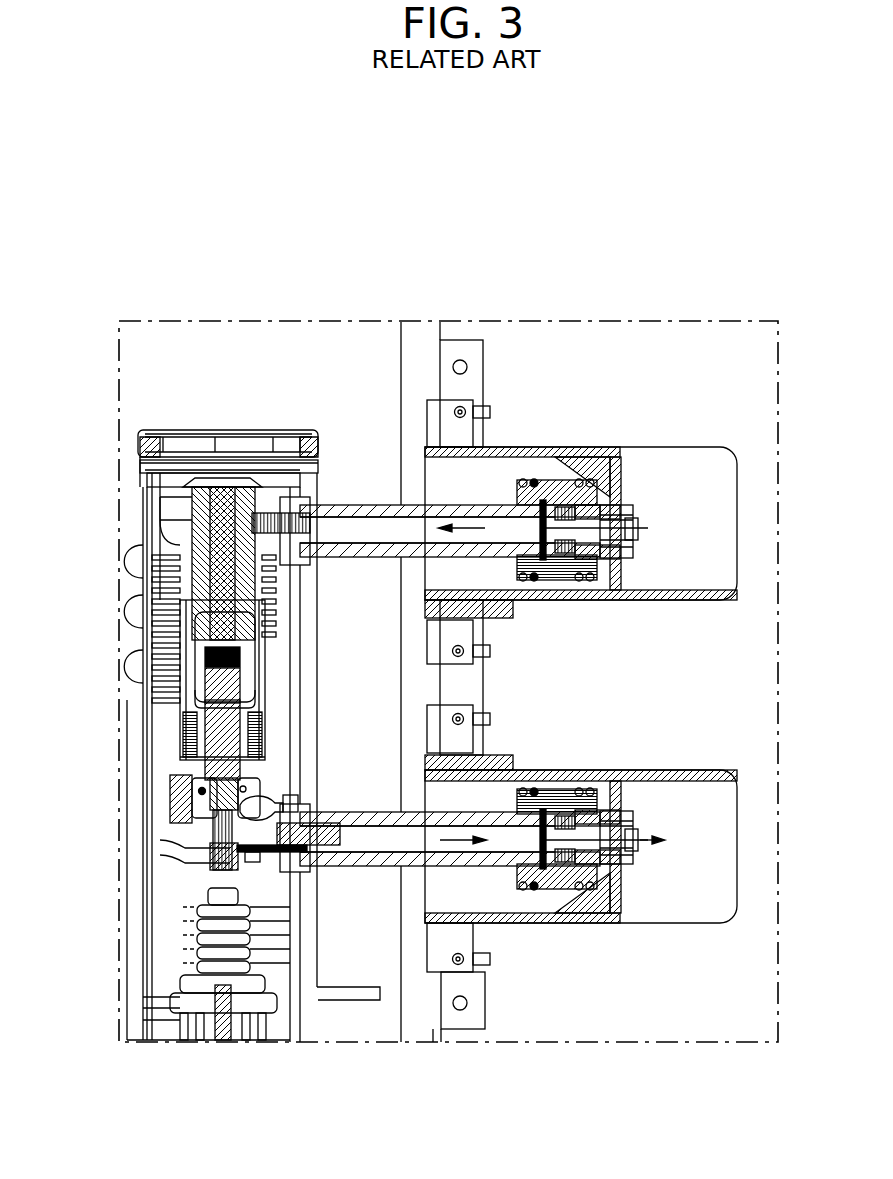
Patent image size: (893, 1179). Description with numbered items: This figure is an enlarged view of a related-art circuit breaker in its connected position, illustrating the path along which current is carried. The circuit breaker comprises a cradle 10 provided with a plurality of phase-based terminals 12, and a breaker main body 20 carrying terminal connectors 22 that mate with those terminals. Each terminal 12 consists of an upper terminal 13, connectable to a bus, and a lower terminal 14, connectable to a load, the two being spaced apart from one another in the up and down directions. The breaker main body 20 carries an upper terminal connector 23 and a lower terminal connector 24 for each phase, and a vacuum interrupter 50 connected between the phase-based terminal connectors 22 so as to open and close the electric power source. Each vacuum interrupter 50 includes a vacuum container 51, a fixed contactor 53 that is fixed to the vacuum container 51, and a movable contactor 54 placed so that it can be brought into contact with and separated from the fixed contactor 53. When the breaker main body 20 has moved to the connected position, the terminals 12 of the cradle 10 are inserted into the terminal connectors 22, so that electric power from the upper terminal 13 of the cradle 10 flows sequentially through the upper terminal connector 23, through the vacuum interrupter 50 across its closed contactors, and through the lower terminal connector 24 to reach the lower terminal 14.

The cradle 10 is at (591, 420).
The terminal 12 is at (830, 580).
The upper terminal 13 is at (640, 528).
The lower terminal 14 is at (636, 812).
The breaker main body 20 is at (249, 410).
The terminal connector 22 is at (450, 268).
The upper conductor rod 23 is at (370, 508).
The lower conductor rod 24 is at (412, 805).
The vacuum interrupter 50 is at (60, 596).
The vacuum container 51 is at (182, 630).
The fixed contactor 53 is at (202, 656).
The movable contactor 54 is at (193, 677).